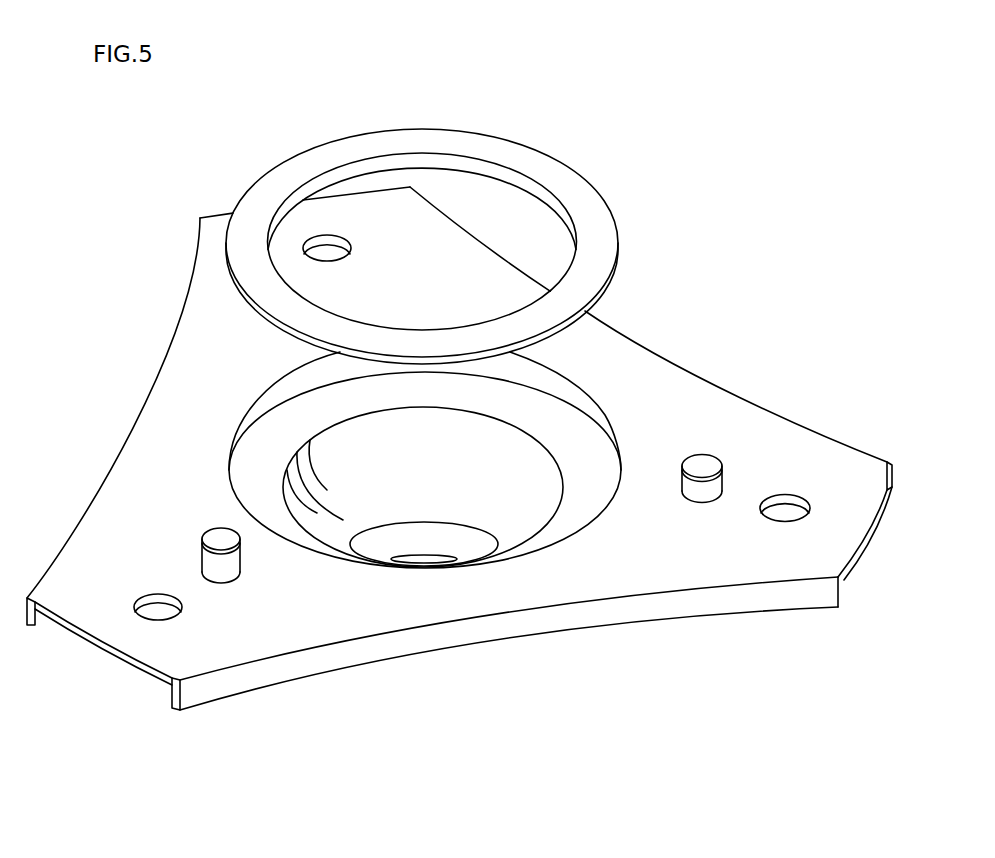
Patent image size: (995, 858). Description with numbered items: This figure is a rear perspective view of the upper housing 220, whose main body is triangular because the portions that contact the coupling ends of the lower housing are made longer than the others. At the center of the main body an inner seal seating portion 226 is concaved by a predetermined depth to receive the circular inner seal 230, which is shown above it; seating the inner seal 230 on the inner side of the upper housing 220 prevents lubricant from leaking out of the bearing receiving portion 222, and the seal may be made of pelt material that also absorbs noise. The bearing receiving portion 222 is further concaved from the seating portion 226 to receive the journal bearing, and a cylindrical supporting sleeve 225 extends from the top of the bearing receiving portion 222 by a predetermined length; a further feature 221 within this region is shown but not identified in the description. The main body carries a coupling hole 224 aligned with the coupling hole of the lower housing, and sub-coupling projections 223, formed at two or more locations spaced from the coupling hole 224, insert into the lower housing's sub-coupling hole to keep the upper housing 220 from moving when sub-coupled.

The upper housing 220 is at (147, 227).
The bottom of insertion hole 221 is at (427, 562).
The bearing receiving portion 222 is at (518, 473).
The sub-coupling projection 223 is at (220, 533).
The coupling hole 224 is at (785, 508).
The cylindrical supporting sleeve 225 is at (313, 608).
The inner seal seating portion 226 is at (260, 450).
The inner seal 230 is at (587, 205).